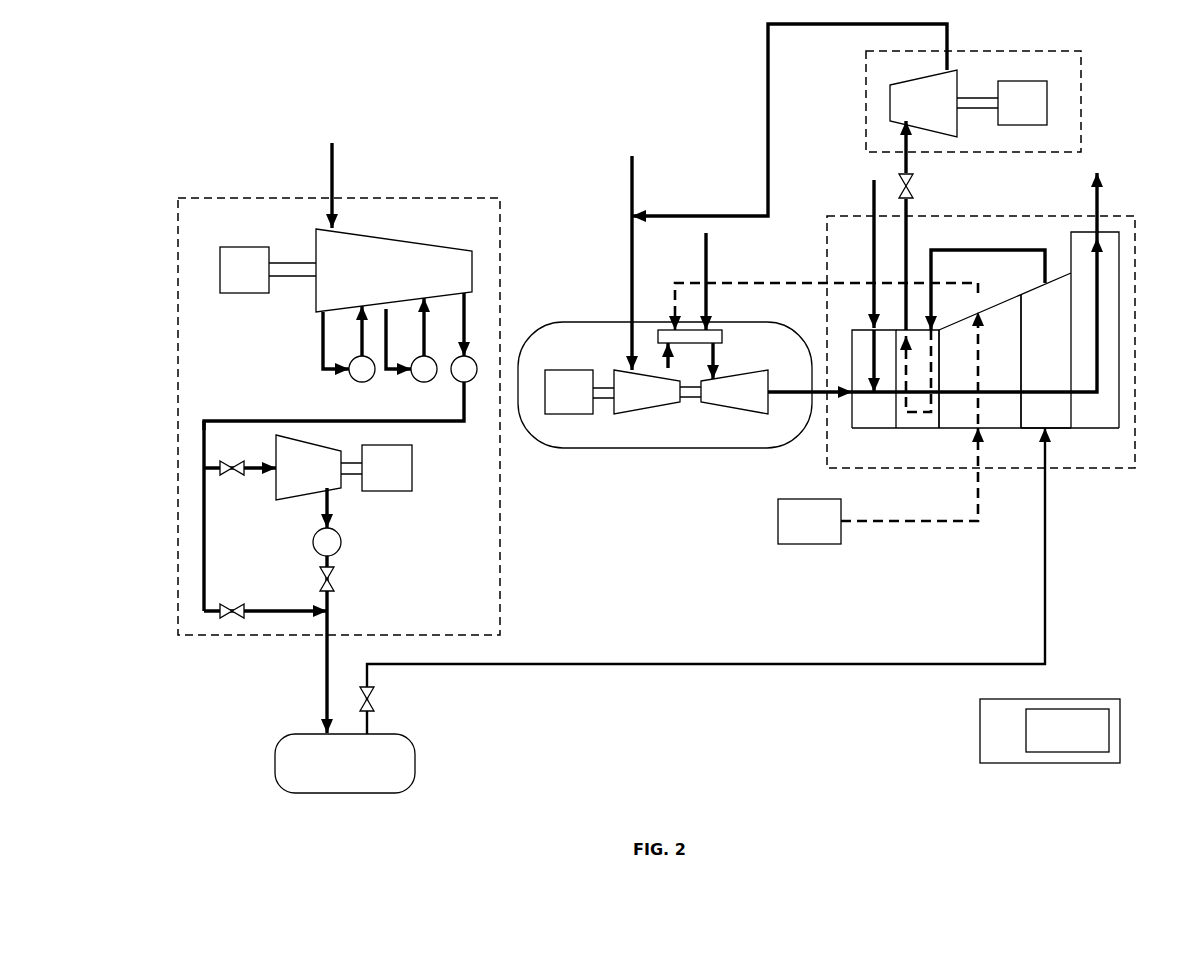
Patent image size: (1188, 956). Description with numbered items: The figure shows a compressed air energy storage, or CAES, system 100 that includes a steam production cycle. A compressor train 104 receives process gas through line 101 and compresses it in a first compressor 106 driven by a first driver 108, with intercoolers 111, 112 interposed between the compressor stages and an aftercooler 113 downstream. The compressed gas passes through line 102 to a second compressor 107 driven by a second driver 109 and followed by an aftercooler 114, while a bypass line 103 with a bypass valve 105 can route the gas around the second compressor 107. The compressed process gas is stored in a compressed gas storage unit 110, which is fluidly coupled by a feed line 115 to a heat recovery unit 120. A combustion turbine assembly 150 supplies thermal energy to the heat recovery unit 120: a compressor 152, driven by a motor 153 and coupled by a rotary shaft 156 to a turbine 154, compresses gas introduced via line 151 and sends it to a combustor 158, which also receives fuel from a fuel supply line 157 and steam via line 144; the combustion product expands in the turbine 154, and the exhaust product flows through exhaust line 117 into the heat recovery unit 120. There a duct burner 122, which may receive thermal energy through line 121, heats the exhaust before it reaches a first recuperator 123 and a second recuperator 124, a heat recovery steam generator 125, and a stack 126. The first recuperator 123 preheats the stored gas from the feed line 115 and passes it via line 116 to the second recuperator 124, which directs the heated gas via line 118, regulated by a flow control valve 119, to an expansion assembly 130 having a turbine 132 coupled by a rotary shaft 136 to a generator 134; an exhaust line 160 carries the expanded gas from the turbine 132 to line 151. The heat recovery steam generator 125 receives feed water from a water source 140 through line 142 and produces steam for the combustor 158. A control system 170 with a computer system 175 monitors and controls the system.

The CAES system 100 is at (450, 84).
The line 101 is at (330, 180).
The line 102 is at (265, 421).
The bypass line 103 is at (204, 543).
The compressor train 104 is at (235, 198).
The bypass valve 105 is at (227, 618).
The first compressor 106 is at (316, 242).
The second compressor 107 is at (283, 500).
The first driver 108 is at (268, 270).
The second driver 109 is at (376, 468).
The compressed gas storage unit 110 is at (345, 763).
The intercooler 111 is at (352, 380).
The intercooler 112 is at (415, 380).
The aftercooler 113 is at (455, 380).
The aftercooler 114 is at (341, 542).
The feed line 115 is at (488, 664).
The line 116 is at (1005, 250).
The exhaust line 117 is at (820, 393).
The line 118 is at (906, 245).
The flow control valve 119 is at (913, 186).
The heat recovery unit 120 is at (1135, 232).
The line 121 is at (873, 188).
The duct burner 122 is at (872, 428).
The first recuperator 123 is at (1055, 428).
The second recuperator 124 is at (920, 428).
The heat recovery steam generator 125 is at (990, 428).
The stack 126 is at (1119, 428).
The expansion assembly 130 is at (1081, 92).
The turbine 132 is at (890, 103).
The generator 134 is at (1022, 103).
The rotary shaft 136 is at (968, 98).
The water source 140 is at (809, 521).
The line 142 is at (917, 521).
The line 144 is at (757, 283).
The combustion turbine assembly 150 is at (665, 448).
The line 151 is at (632, 240).
The compressor 152 is at (645, 414).
The motor 153 is at (569, 392).
The turbine 154 is at (735, 414).
The rotary shaft 156 is at (604, 388).
The fuel supply line 157 is at (720, 318).
The combustor 158 is at (722, 338).
The exhaust line 160 is at (950, 40).
The control system 170 is at (980, 732).
The computer system 175 is at (1067, 730).